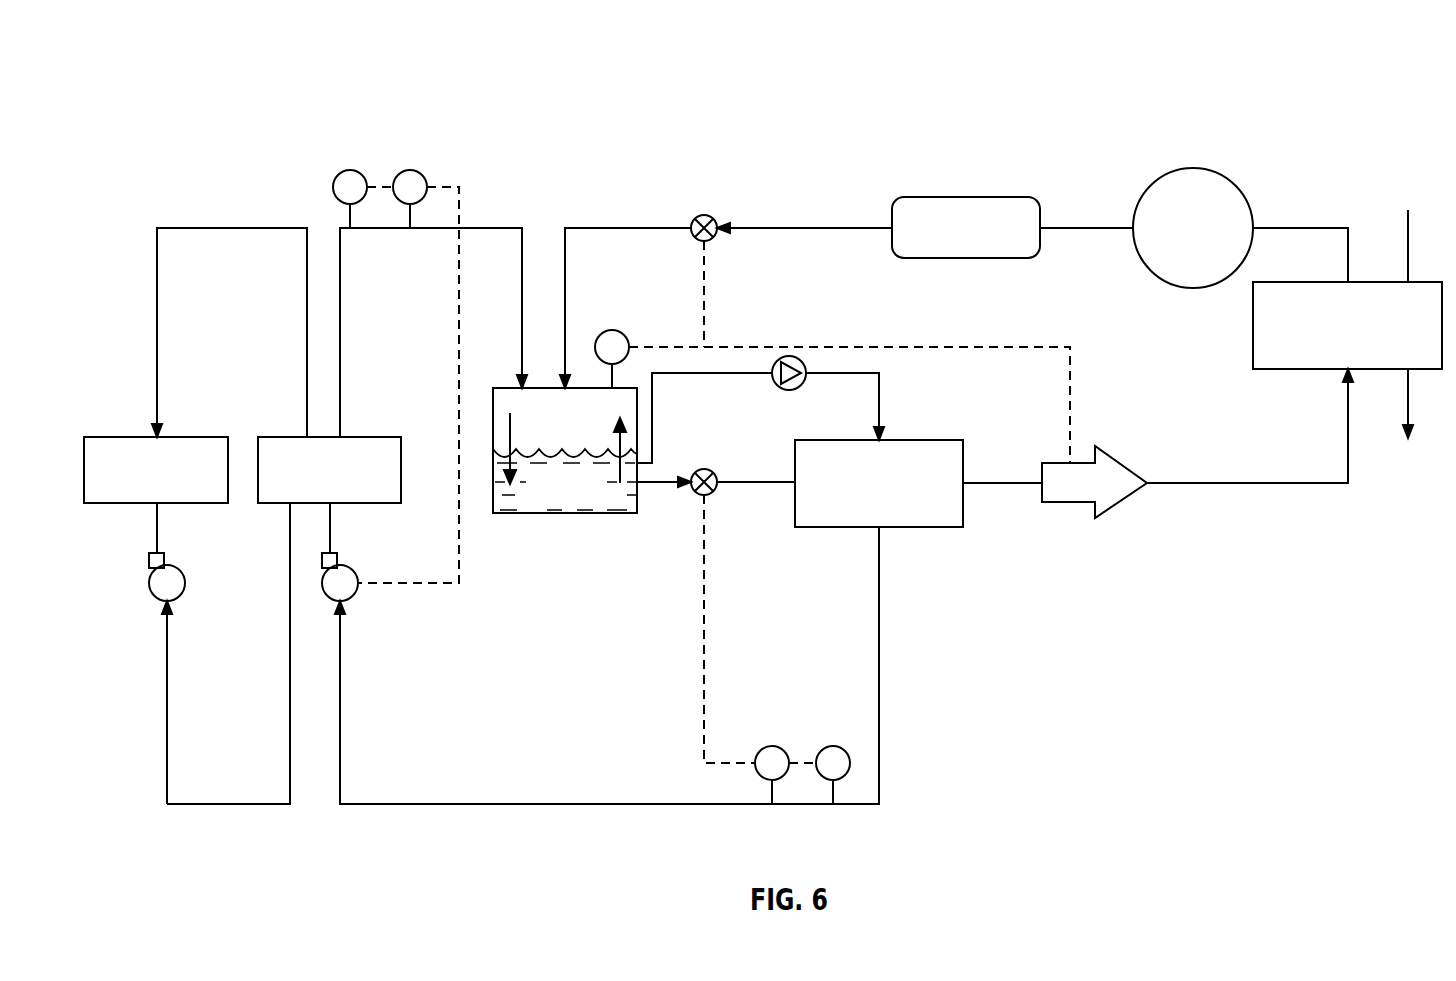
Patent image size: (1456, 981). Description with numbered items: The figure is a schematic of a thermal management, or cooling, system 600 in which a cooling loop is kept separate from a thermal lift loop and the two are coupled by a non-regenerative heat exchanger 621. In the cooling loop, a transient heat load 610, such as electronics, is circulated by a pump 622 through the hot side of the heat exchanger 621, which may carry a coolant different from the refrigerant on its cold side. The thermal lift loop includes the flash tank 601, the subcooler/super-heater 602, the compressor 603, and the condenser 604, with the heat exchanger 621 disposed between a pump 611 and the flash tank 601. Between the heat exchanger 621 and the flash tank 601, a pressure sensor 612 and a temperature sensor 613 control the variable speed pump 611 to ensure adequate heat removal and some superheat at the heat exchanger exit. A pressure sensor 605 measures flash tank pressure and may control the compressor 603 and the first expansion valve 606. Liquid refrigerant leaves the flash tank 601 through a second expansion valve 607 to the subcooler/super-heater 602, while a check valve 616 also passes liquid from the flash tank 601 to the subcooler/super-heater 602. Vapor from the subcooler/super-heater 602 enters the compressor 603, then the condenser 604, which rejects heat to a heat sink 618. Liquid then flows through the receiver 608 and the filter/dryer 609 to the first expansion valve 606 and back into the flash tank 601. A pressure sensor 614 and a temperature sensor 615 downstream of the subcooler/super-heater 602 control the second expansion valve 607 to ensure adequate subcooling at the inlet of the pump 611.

The thermal management system 600 is at (205, 62).
The flash tank 601 is at (618, 514).
The subcooler/super-heater 602 is at (918, 440).
The compressor 603 is at (1068, 502).
The condenser 604 is at (1285, 370).
The pressure sensor 605 is at (612, 330).
The expansion valve (EV-1) 606 is at (713, 241).
The expansion valve (EV-2) 607 is at (713, 494).
The receiver 608 is at (1195, 168).
The filter/dryer 609 is at (910, 197).
The transient heat load 610 is at (143, 436).
The pump 611 is at (350, 599).
The pressure sensor 612 is at (351, 170).
The temperature sensor 613 is at (410, 170).
The pressure sensor 614 is at (772, 746).
The temperature sensor 615 is at (833, 746).
The check valve 616 is at (796, 386).
The heat sink 618 is at (1405, 222).
The non-regenerative heat exchanger 621 is at (290, 436).
The pump 622 is at (177, 599).